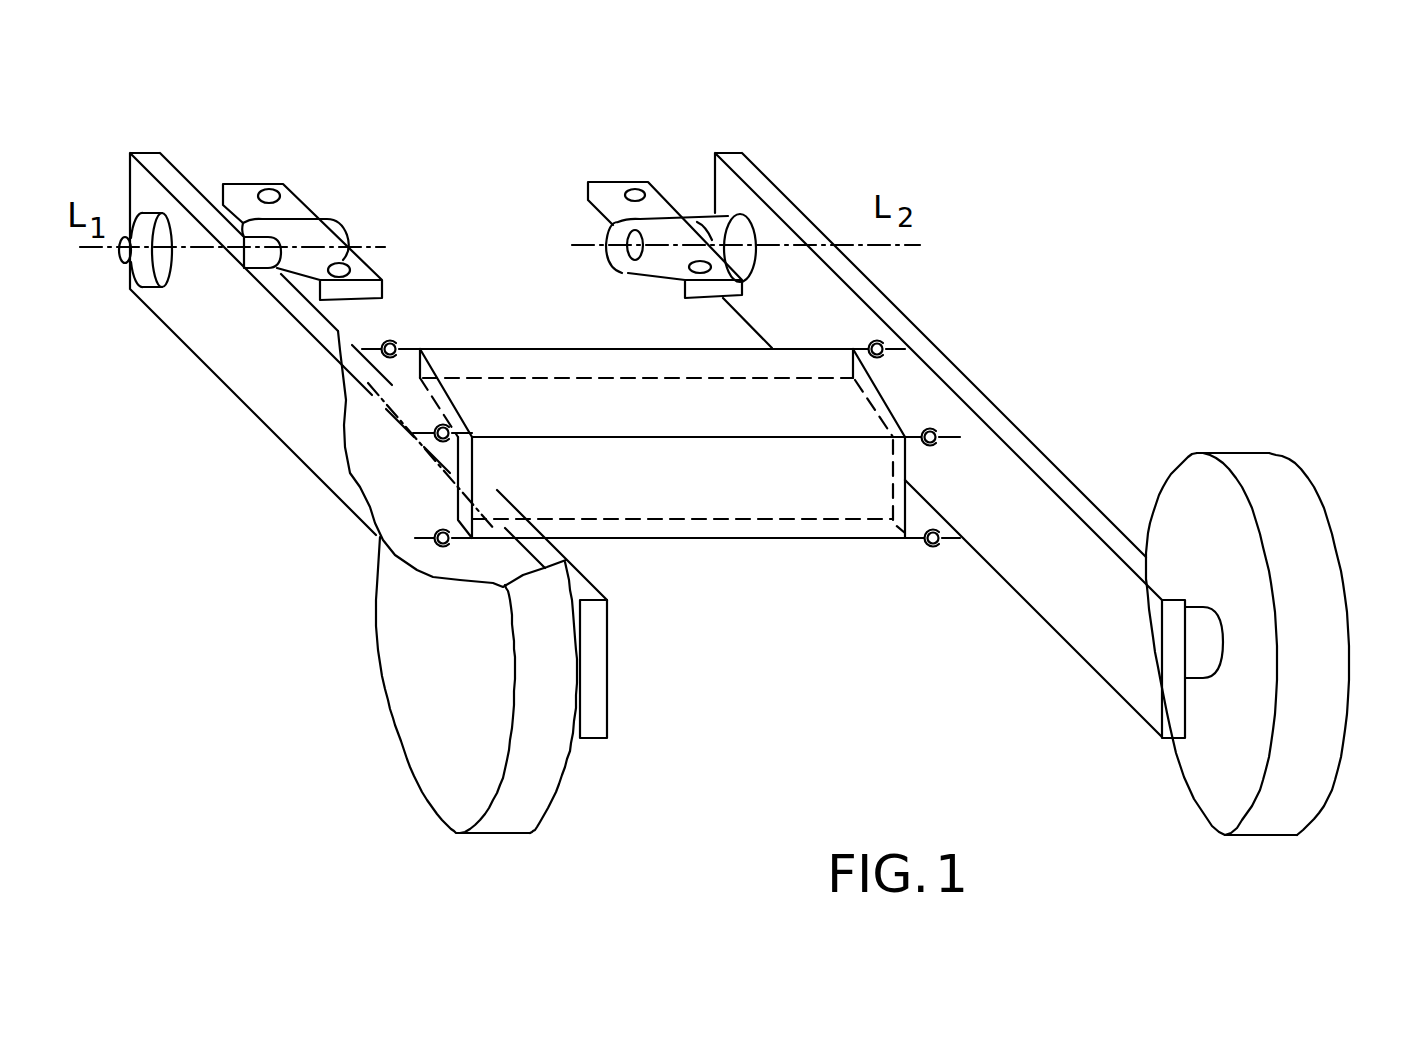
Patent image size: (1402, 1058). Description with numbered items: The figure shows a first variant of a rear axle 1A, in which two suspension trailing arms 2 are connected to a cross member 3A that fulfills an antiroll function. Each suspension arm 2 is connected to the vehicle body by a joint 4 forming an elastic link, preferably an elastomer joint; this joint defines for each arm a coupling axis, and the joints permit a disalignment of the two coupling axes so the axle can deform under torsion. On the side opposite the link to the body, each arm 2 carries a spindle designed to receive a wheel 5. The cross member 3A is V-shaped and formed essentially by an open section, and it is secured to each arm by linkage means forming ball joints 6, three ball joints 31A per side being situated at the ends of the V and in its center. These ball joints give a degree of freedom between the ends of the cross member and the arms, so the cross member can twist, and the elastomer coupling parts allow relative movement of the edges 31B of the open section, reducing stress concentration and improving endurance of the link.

The rear axle 1A is at (1120, 326).
The suspension trailing arm 2 is at (257, 380).
The cross member 3A is at (772, 497).
The ball joint 31A is at (415, 393).
The edges of the section 31B is at (470, 358).
The joint 4 is at (243, 221).
The wheel 5 is at (423, 750).
The ball joint 6 is at (884, 340).